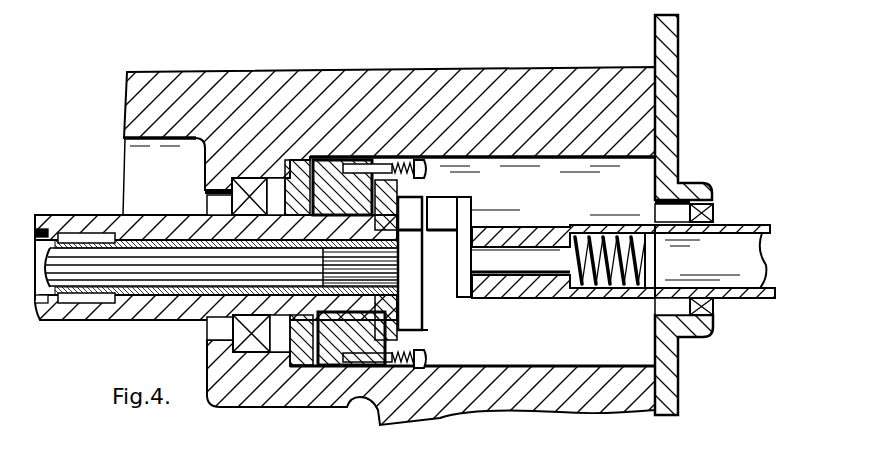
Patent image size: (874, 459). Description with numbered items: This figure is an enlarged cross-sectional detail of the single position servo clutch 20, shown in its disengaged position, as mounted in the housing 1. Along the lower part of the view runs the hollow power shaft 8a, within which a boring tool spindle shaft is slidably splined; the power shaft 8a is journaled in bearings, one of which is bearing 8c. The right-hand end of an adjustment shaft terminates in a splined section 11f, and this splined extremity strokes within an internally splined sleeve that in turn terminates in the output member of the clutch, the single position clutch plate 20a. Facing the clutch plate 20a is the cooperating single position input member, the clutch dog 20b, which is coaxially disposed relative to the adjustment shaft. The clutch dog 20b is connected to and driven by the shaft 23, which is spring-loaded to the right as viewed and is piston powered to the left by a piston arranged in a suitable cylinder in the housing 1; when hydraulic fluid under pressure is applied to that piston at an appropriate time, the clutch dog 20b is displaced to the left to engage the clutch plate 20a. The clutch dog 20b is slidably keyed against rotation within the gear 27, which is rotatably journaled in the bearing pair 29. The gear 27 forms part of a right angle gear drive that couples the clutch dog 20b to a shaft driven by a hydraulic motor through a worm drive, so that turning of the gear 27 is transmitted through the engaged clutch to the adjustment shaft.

The housing 1 is at (353, 403).
The power shaft 8a is at (67, 220).
The bearing 8c is at (233, 200).
The splined section 11f is at (80, 262).
The single position clutch 20 is at (453, 310).
The single position clutch plate 20a is at (412, 327).
The clutch dog 20b is at (453, 212).
The shaft 23 is at (548, 213).
The gear 27 is at (742, 217).
The bearing pair 29 is at (713, 200).